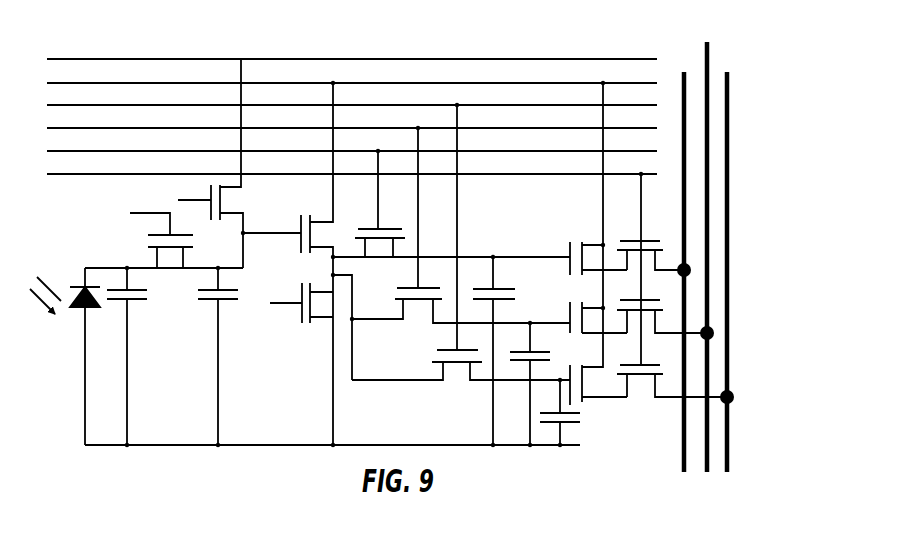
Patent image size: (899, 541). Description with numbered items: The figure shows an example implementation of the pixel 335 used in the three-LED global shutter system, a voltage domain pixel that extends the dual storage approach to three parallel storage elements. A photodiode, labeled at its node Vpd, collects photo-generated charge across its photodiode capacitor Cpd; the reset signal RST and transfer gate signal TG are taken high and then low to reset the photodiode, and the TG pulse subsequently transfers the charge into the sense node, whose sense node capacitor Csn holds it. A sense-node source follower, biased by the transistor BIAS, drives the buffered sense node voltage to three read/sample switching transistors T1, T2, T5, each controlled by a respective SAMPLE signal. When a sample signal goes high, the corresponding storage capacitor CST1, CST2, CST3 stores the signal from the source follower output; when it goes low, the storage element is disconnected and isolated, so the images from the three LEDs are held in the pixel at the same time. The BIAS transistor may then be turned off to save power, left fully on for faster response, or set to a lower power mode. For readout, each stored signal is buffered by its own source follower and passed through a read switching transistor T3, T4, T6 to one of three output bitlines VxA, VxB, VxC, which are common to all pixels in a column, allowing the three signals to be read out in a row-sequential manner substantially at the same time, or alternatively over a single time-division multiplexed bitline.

The pixel 335 is at (440, 249).
The photodiode Vpd is at (136, 340).
The transfer gate signal TG is at (150, 234).
The photodiode capacitor Cpd is at (137, 356).
The sense node capacitor Csn is at (226, 356).
The reset signal RST is at (235, 223).
The bias transistor BIAS is at (295, 301).
The read/sample switching transistor T1 is at (451, 230).
The read/sample switching transistor T2 is at (451, 326).
The additional switching transistor T5 is at (461, 356).
The first storage capacitor CST1 is at (514, 351).
The second storage capacitor CST2 is at (551, 384).
The third storage capacitor CST3 is at (582, 412).
The read/sample switching transistor T3 is at (650, 242).
The read/sample switching transistor T4 is at (662, 303).
The additional switching transistor T6 is at (672, 368).
The output bitline VxA is at (668, 272).
The output bitline VxB is at (722, 255).
The output bitline VxC is at (749, 272).